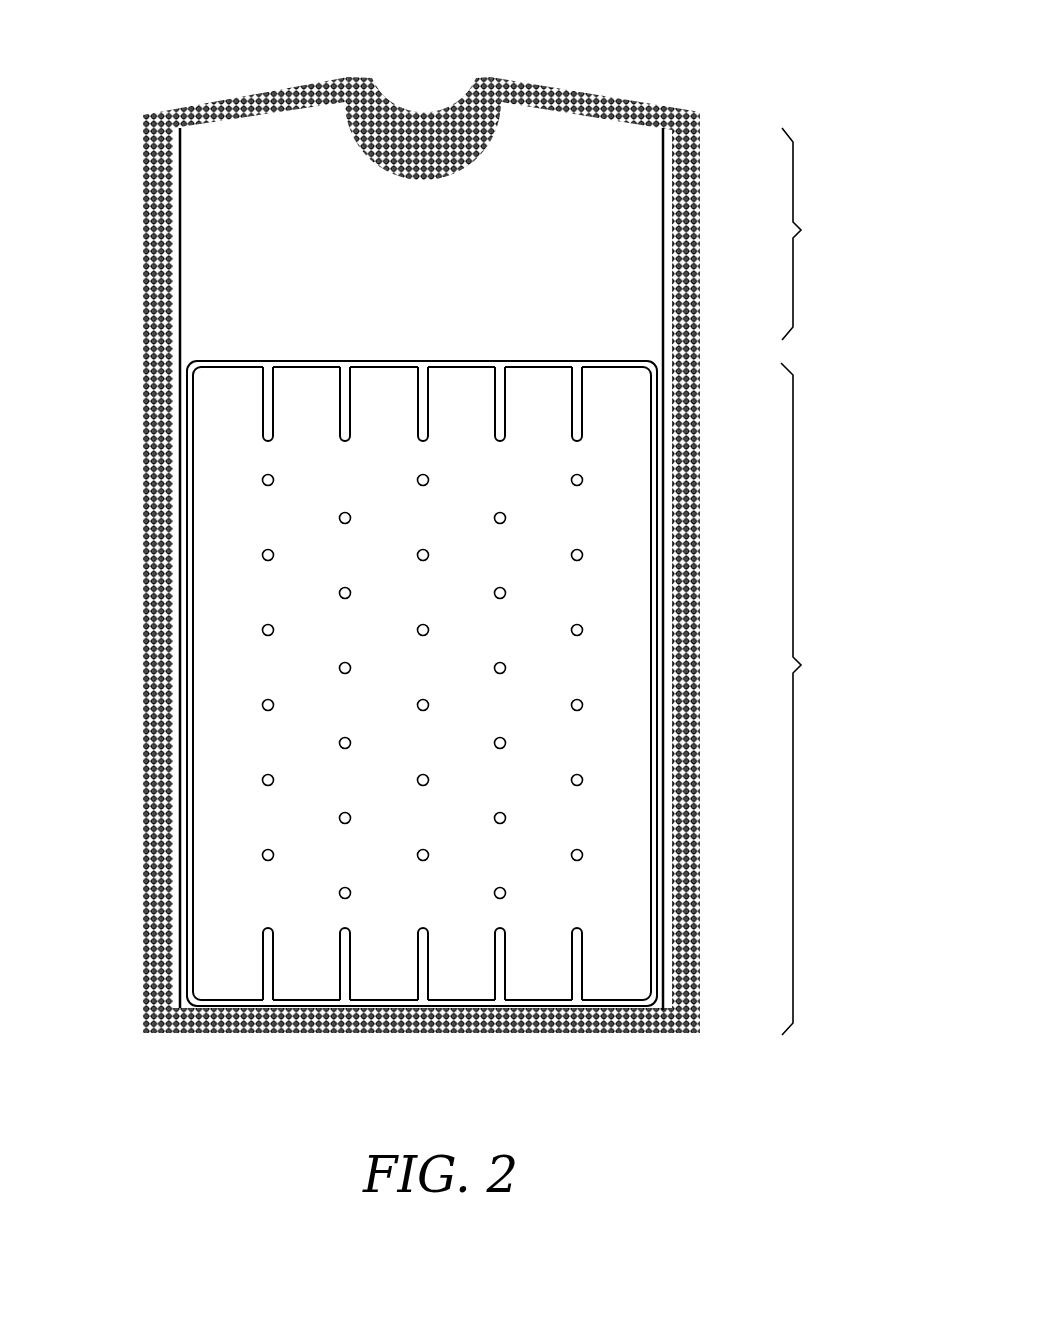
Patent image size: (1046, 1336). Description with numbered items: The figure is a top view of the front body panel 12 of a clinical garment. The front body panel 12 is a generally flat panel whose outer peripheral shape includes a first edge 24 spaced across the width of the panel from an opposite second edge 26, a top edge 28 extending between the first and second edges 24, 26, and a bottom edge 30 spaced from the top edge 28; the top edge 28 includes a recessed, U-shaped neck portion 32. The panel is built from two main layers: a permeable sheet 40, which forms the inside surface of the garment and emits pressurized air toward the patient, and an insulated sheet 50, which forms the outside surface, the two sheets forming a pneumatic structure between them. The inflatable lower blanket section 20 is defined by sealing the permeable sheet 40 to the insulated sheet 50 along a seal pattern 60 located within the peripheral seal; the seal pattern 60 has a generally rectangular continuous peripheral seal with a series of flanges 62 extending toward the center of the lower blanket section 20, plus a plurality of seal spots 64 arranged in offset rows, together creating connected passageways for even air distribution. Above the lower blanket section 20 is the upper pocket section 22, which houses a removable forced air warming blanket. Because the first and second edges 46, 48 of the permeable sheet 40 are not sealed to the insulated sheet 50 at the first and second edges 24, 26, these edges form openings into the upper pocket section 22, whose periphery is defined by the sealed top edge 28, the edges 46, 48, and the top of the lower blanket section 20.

The front body panel 12 is at (654, 44).
The inflatable lower blanket section 20 is at (808, 699).
The upper pocket section 22 is at (812, 234).
The first edge 24 is at (146, 543).
The second edge 26 is at (700, 577).
The top edge 28 is at (421, 94).
The bottom edge 30 is at (522, 1034).
The neck portion 32 is at (420, 155).
The permeable sheet 40 is at (218, 198).
The first edge of permeable sheet 46 is at (180, 288).
The second edge of permeable sheet 48 is at (672, 285).
The insulated sheet 50 is at (146, 150).
The seal pattern 60 is at (190, 925).
The flanges 62 is at (263, 408).
The seal spots 64 is at (263, 706).